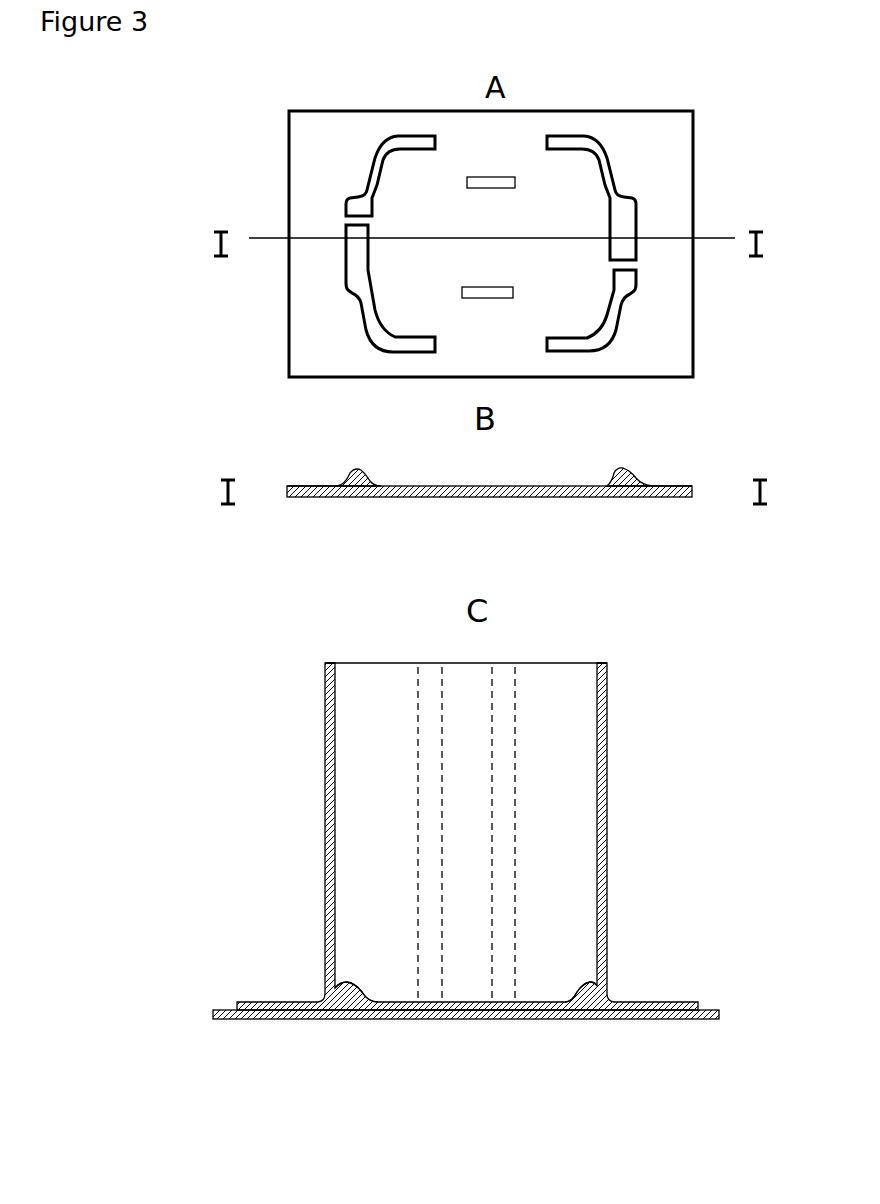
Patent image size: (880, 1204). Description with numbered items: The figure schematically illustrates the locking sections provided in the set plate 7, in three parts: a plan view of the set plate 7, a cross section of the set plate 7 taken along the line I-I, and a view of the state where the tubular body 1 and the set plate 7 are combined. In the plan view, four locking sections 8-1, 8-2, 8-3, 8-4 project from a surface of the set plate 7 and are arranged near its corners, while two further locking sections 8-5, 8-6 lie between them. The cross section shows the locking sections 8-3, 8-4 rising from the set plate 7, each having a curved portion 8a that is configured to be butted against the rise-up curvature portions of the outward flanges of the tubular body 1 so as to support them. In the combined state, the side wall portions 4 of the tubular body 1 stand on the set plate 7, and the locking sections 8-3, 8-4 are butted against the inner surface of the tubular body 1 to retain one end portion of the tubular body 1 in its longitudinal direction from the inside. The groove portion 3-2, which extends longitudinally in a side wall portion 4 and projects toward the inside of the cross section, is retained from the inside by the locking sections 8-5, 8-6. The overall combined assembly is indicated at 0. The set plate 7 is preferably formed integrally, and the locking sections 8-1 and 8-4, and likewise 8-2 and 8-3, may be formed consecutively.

The set plate 7 is at (698, 429).
The locking section 8-1 is at (371, 171).
The locking section 8-2 is at (614, 152).
The locking section 8-3 is at (610, 333).
The locking section 8-4 is at (366, 333).
The locking section 8-5 is at (490, 189).
The locking section 8-6 is at (492, 290).
The curved portion 8a is at (343, 482).
The wire harness protector assembly 0 is at (641, 678).
The tubular body 1 is at (607, 791).
The side wall portion 4 is at (396, 986).
The groove portion 3-2 is at (470, 990).